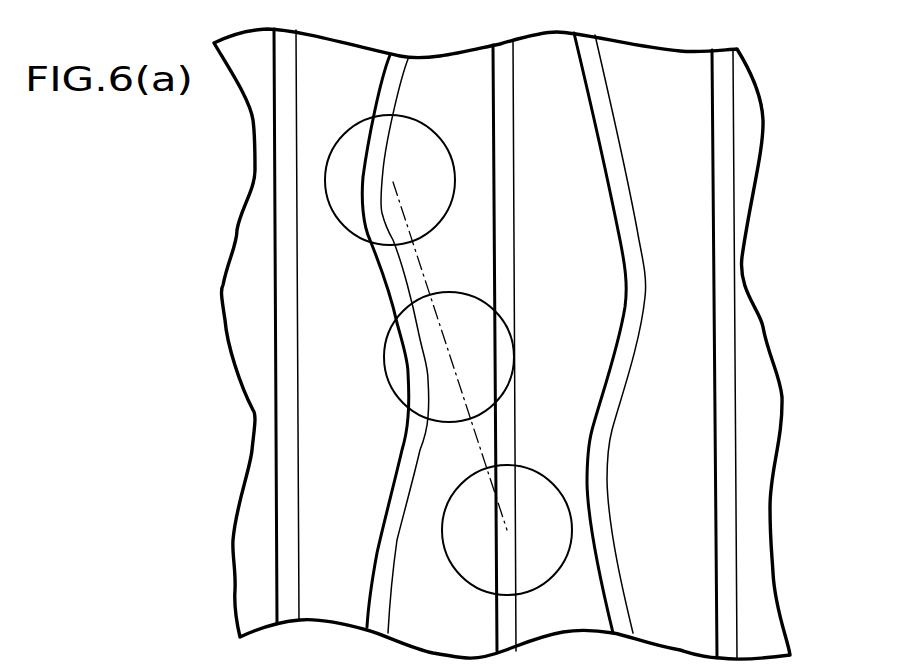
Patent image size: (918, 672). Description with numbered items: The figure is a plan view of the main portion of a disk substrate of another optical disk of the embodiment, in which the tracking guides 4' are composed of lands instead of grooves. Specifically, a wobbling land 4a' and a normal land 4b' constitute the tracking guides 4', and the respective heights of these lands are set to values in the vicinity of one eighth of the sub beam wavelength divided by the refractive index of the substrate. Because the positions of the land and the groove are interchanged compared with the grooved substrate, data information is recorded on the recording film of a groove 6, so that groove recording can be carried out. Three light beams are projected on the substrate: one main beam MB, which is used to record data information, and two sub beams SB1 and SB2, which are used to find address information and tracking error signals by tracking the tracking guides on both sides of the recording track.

The tracking guides 4' is at (827, 215).
The wobbling land 4a' is at (723, 258).
The normal land 4b' is at (762, 181).
The groove 6 is at (585, 412).
The main beam MB is at (450, 292).
The sub beam SB1 is at (443, 133).
The sub beam SB2 is at (565, 563).